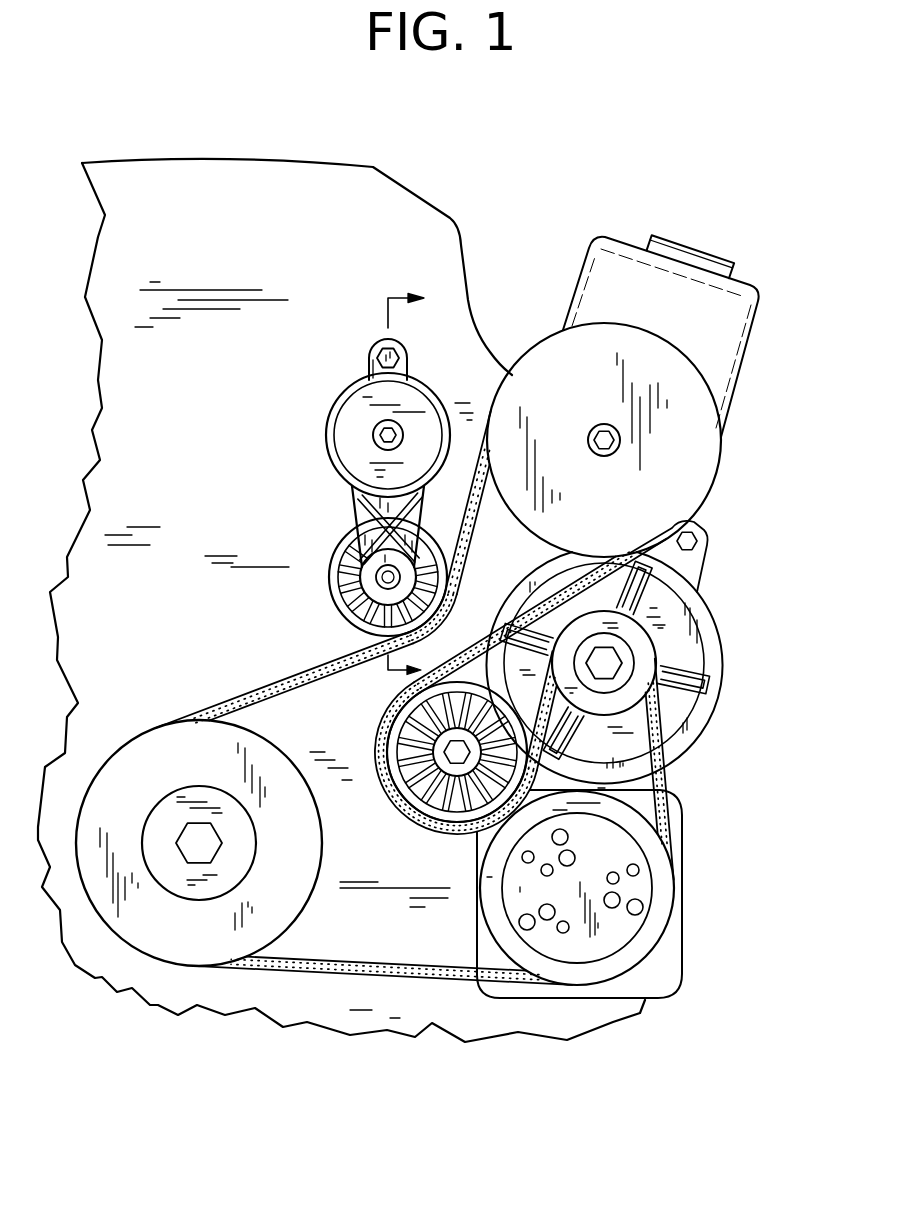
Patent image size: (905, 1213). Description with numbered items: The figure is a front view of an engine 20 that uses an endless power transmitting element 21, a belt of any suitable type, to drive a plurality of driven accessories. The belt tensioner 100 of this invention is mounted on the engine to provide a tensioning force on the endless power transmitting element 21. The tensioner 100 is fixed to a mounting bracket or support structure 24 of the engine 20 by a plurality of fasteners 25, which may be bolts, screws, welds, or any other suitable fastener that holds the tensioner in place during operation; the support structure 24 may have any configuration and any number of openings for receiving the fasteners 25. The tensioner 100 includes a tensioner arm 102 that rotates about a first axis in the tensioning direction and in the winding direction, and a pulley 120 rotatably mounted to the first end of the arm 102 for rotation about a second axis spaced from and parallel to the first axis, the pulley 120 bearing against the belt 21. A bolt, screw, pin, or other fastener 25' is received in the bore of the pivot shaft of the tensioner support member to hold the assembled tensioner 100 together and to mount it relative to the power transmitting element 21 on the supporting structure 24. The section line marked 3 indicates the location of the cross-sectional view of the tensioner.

The engine 20 is at (458, 182).
The endless power transmitting element 21 is at (290, 677).
The mounting bracket or support structure 24 is at (462, 236).
The fasteners 25 is at (359, 348).
The fastener 25' is at (422, 405).
The belt tensioner 100 is at (322, 475).
The tensioner arm 102 is at (420, 512).
The pulley 120 is at (330, 577).
The section line 3-3 indicator 3 is at (396, 490).